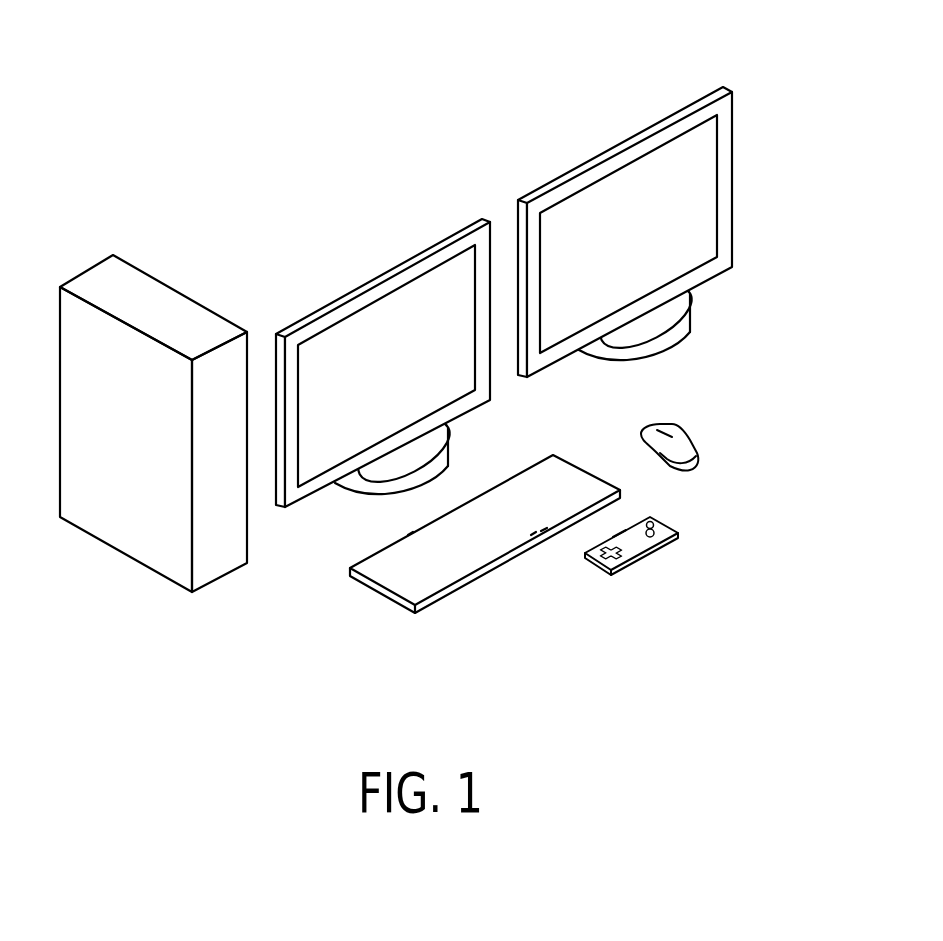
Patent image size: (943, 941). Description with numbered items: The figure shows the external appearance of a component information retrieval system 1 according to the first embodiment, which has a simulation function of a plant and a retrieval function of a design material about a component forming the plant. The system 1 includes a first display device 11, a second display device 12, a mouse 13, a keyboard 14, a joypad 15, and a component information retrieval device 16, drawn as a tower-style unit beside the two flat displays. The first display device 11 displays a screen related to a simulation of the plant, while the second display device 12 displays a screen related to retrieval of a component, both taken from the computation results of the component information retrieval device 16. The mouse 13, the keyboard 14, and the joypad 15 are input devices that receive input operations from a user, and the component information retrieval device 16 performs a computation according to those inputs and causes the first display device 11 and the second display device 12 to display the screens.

The component information retrieval system 1 is at (174, 109).
The first display device 11 is at (373, 278).
The second display device 12 is at (733, 180).
The mouse 13 is at (692, 440).
The keyboard 14 is at (382, 598).
The joypad 15 is at (672, 523).
The component information retrieval device 16 is at (125, 558).